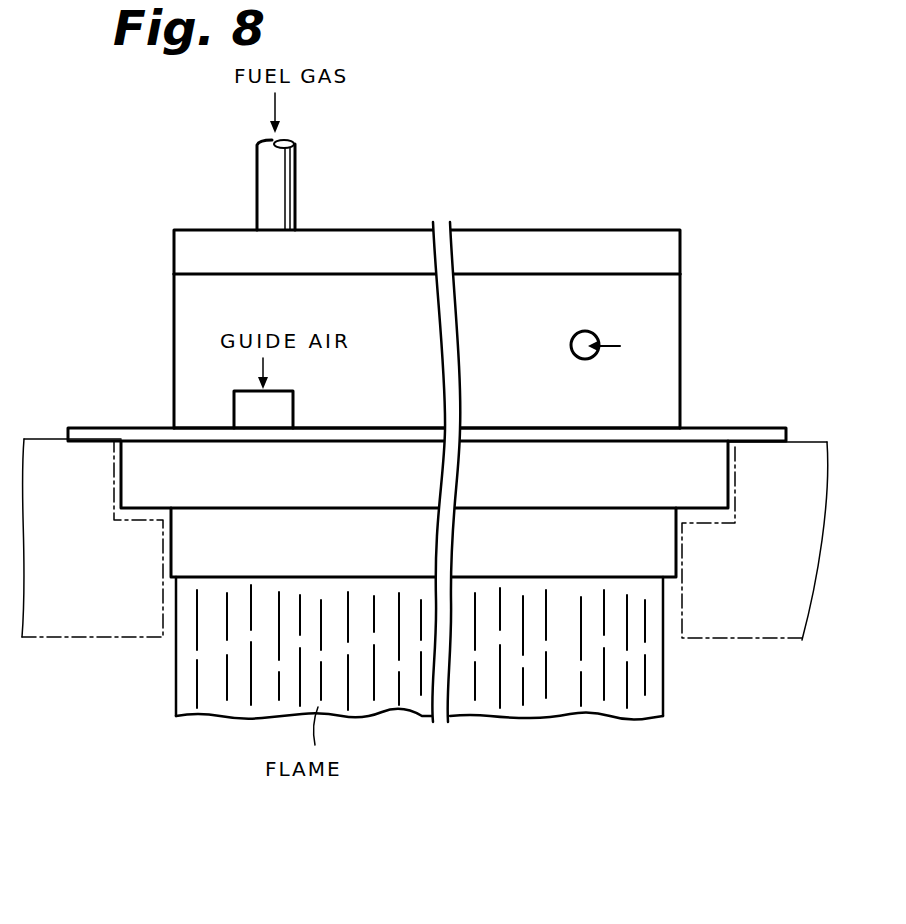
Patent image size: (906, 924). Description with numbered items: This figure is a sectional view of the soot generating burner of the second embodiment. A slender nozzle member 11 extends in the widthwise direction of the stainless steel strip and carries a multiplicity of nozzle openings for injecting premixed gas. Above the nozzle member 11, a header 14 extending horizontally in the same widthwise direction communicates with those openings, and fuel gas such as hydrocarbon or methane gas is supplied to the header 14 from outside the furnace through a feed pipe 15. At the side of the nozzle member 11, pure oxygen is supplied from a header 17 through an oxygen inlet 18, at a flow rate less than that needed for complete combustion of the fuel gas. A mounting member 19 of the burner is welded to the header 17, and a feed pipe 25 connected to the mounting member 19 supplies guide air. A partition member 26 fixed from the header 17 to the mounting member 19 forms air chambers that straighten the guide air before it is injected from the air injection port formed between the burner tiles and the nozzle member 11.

The nozzle member 11 is at (531, 555).
The header 14 is at (567, 247).
The feed pipe 15 is at (282, 188).
The header 17 is at (660, 292).
The oxygen inlet port 18 is at (572, 337).
The mounting member 19 is at (748, 428).
The feed pipe 25 is at (283, 410).
The partition member 26 is at (556, 488).